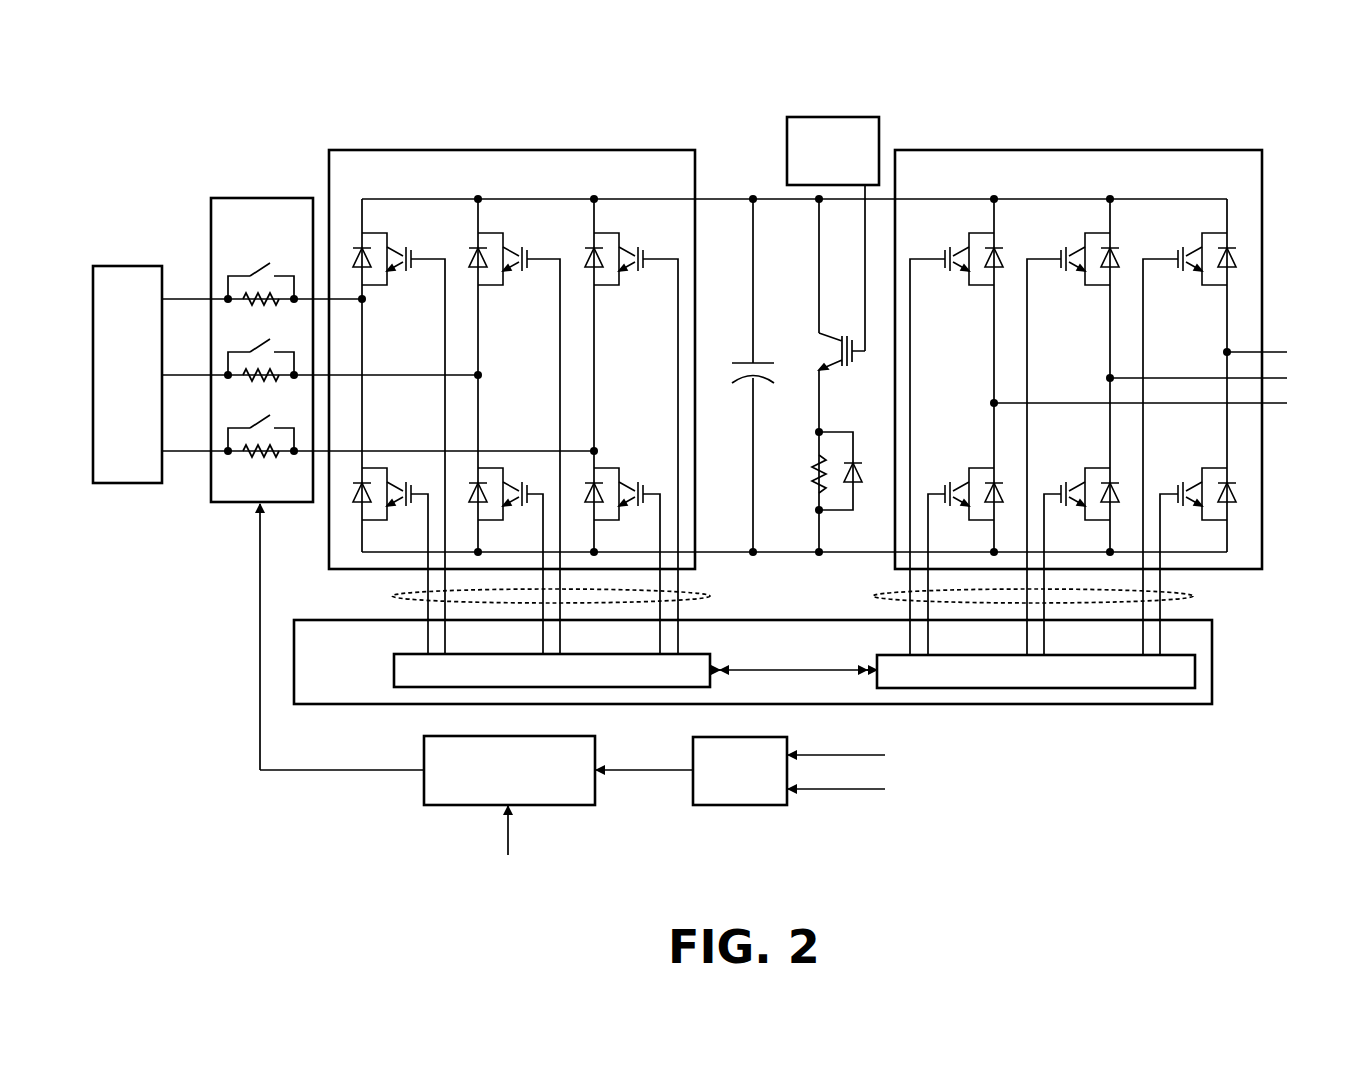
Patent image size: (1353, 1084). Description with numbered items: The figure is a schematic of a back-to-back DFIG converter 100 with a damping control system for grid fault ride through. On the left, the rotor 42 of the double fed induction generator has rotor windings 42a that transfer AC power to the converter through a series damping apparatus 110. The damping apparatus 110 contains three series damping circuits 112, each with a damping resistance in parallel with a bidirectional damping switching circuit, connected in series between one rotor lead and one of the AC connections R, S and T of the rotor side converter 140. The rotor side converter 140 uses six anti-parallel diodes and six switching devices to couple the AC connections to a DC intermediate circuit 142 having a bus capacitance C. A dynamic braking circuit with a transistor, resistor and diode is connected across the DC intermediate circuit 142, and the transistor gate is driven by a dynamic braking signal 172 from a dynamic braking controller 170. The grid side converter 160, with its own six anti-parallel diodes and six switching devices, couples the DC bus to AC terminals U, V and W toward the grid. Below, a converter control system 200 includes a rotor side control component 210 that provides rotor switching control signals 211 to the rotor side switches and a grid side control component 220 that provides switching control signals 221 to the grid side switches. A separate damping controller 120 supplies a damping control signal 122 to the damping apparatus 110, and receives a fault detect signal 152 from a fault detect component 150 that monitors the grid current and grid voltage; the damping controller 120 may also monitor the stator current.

The DFIG converter 100 is at (190, 139).
The rotor 42 is at (128, 266).
The rotor windings 42a is at (179, 260).
The series damping apparatus 110 is at (262, 198).
The series damping circuit 112 is at (225, 302).
The rotor side converter 140 is at (329, 175).
The DC intermediate circuit 142 is at (727, 164).
The dynamic braking controller 170 is at (820, 117).
The dynamic braking signal 172 is at (865, 251).
The grid side converter 160 is at (1262, 175).
The converter control system 200 is at (314, 620).
The rotor switching control signals 211 is at (392, 597).
The grid side switching control signals 221 is at (874, 597).
The rotor side control component 210 is at (710, 661).
The grid side control component 220 is at (877, 662).
The damping control signal 122 is at (260, 638).
The damping controller 120 is at (450, 805).
The fault detect signal 152 is at (650, 771).
The fault detect component 150 is at (740, 805).